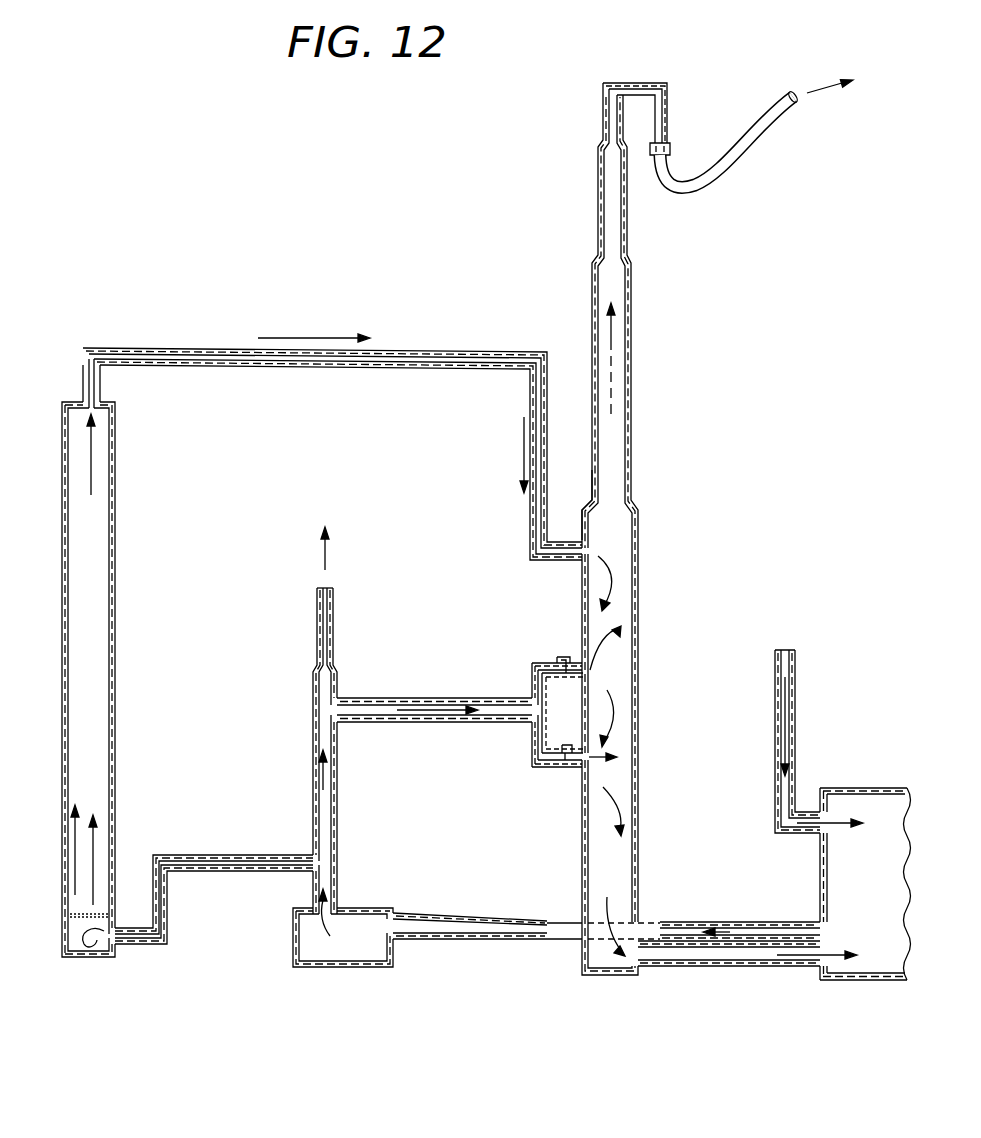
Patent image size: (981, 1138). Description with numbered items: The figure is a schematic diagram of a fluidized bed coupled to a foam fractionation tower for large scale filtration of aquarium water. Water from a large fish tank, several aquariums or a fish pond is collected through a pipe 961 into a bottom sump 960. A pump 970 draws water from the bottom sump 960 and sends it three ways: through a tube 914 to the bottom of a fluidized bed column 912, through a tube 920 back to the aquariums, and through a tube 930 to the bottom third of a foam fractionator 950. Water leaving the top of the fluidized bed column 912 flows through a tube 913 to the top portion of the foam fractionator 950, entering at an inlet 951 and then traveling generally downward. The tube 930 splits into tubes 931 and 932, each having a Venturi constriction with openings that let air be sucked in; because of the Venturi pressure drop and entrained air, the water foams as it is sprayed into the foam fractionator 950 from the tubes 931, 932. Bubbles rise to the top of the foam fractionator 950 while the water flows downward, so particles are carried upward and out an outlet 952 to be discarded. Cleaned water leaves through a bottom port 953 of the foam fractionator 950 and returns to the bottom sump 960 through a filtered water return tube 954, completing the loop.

The fluidized bed column 912 is at (61, 405).
The tube 913 is at (232, 348).
The tube 914 is at (257, 854).
The tube 920 is at (317, 603).
The tube 930 is at (448, 698).
The tube 931 is at (532, 663).
The tube 932 is at (533, 767).
The foam fractionator 950 is at (641, 535).
The inlet 951 is at (588, 552).
The outlet 952 is at (605, 83).
The bottom port 953 is at (641, 975).
The filtered water return tube 954 is at (747, 967).
The bottom sump 960 is at (858, 805).
The pipe 961 is at (797, 670).
The pump 970 is at (372, 954).